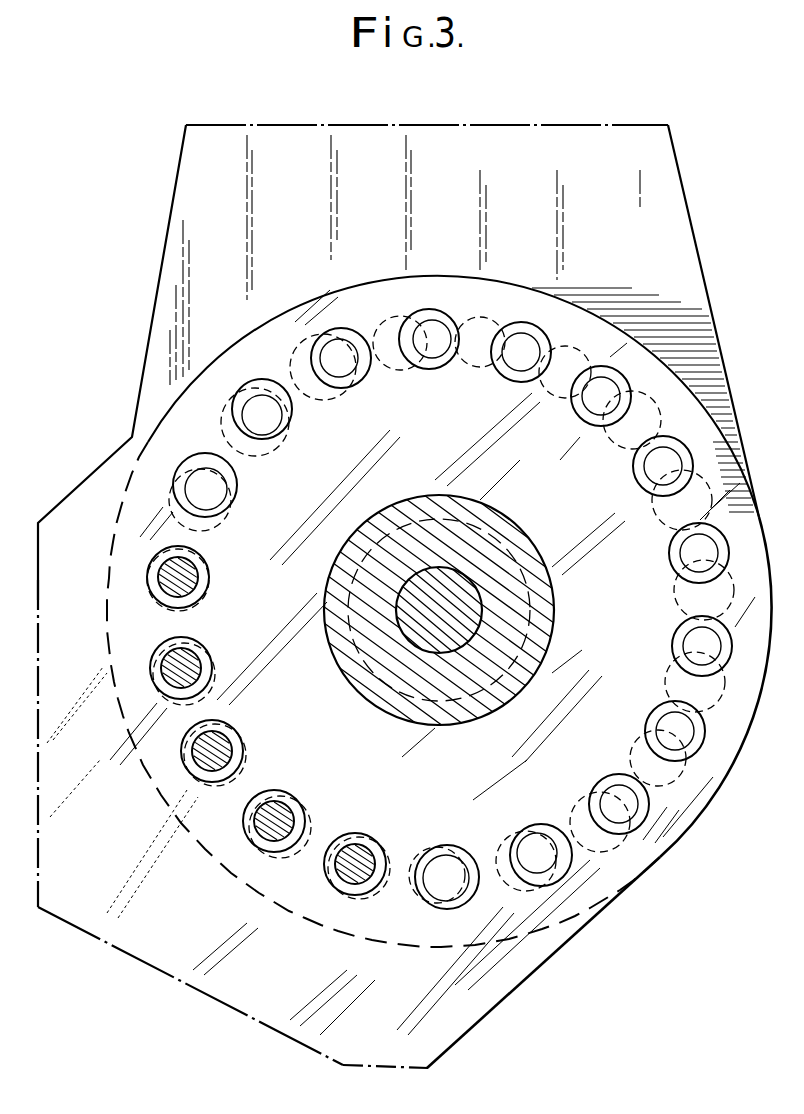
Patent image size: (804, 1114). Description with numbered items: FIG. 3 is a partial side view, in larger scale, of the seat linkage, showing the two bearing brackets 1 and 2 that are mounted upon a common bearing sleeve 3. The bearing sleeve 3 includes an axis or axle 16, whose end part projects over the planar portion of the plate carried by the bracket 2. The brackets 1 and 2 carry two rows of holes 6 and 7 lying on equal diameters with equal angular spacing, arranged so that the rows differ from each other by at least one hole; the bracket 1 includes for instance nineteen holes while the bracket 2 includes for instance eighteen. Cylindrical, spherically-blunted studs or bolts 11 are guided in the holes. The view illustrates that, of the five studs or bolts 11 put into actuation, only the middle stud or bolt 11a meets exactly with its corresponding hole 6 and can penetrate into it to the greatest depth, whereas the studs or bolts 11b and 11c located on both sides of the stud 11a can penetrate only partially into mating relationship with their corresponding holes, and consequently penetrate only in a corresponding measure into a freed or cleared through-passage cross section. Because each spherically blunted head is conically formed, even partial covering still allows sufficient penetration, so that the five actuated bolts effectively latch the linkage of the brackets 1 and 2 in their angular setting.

The bearing bracket 1 is at (681, 177).
The bearing bracket 2 is at (478, 1023).
The bearing sleeve 3 is at (489, 562).
The axis or axle 16 is at (479, 620).
The holes 6 is at (612, 400).
The holes 7 is at (433, 311).
The studs or bolts 11 is at (351, 332).
The middle stud or bolt 11a is at (228, 742).
The stud or bolt 11b is at (211, 668).
The stud or bolt 11c is at (208, 588).